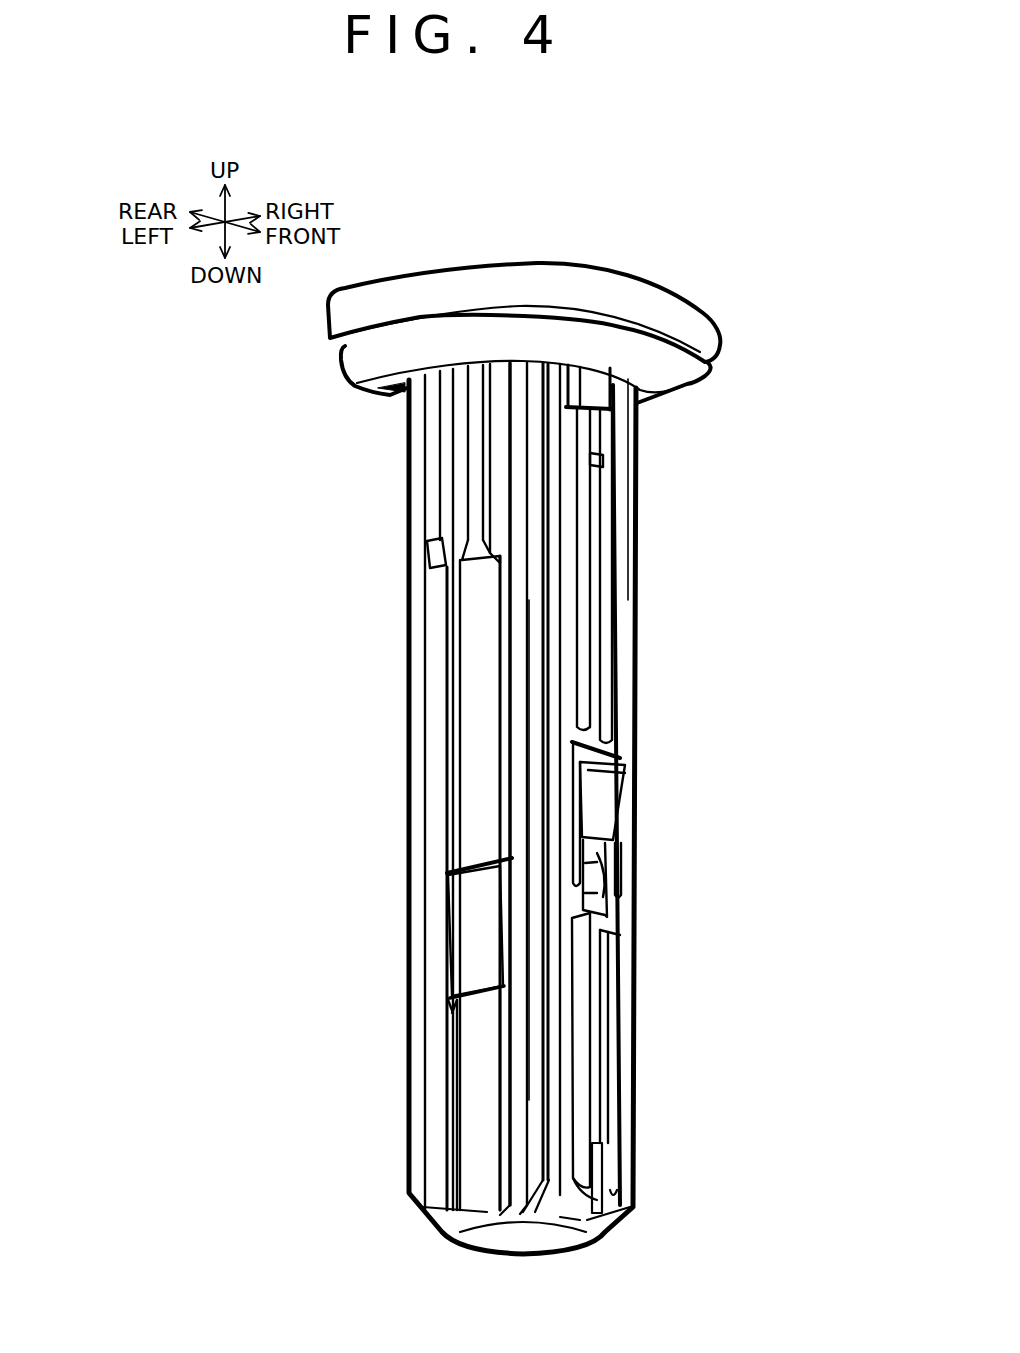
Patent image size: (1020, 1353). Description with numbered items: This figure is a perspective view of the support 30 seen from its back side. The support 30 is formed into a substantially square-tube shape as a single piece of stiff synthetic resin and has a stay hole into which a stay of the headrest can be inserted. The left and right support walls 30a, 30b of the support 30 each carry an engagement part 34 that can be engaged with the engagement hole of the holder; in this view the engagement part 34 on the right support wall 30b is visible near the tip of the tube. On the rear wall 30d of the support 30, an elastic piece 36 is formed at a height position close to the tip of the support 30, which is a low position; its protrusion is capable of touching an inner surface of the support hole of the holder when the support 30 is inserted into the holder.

The support 30 is at (638, 302).
The left support wall 30a is at (465, 880).
The right support wall 30b is at (618, 915).
The rear wall 30d is at (470, 1057).
The engagement part 34 is at (607, 803).
The elastic piece 36 is at (470, 932).